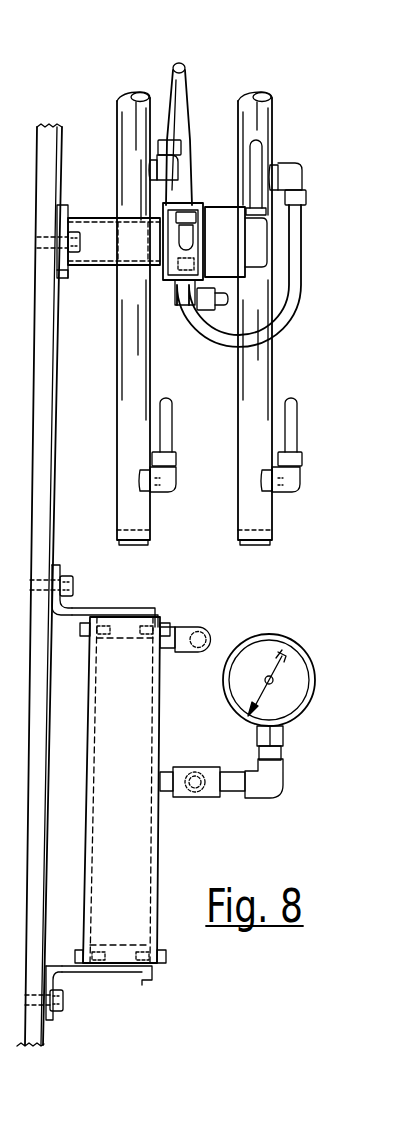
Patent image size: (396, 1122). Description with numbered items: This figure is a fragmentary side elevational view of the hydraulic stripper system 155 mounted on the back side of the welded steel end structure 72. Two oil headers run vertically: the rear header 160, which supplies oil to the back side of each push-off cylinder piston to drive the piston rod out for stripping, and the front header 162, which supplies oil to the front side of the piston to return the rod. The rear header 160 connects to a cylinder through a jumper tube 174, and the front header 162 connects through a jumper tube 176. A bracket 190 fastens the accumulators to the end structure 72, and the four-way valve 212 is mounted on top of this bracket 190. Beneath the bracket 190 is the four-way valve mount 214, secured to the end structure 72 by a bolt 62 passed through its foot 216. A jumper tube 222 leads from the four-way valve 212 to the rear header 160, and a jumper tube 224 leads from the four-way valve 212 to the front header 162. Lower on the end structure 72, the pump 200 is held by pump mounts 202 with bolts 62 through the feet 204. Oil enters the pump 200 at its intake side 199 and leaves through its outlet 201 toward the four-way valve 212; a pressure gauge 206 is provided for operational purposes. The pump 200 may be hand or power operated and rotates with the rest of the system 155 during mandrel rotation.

The hydraulic stripper system 155 is at (239, 53).
The jumper tube 224 is at (175, 78).
The welded steel end structure 72 is at (62, 143).
The four-way valve mount 214 is at (107, 211).
The bolt 62 is at (91, 192).
The four-way valve 212 is at (254, 238).
The foot 216 is at (67, 272).
The bracket 190 is at (162, 282).
The jumper tube 222 is at (217, 343).
The rear header 160 is at (271, 367).
The front header 162 is at (150, 380).
The jumper tube 176 is at (172, 425).
The jumper tube 174 is at (297, 412).
The feet 204 is at (58, 565).
The pump mounts 202 is at (146, 606).
The intake side 199 is at (201, 627).
The pressure gauge 206 is at (296, 634).
The outlet 201 is at (217, 763).
The pump 200 is at (159, 845).